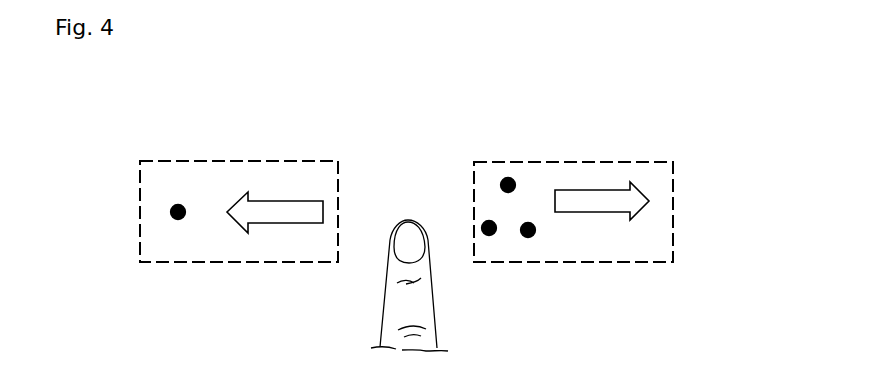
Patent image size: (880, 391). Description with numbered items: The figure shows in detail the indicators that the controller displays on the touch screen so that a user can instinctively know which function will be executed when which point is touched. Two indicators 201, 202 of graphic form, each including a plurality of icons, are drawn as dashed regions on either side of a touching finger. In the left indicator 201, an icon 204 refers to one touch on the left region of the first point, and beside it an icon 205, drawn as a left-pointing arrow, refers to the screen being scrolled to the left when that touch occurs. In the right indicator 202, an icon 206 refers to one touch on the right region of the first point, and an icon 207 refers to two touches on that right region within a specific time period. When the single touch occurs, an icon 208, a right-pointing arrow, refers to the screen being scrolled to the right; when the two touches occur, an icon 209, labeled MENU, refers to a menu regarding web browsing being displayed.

The indicator 201 is at (238, 161).
The indicator 202 is at (673, 215).
The icon 204 is at (171, 212).
The icon 205 is at (285, 223).
The icon 206 is at (509, 177).
The icon 207 is at (509, 233).
The icon 208 is at (600, 190).
The icon 209 is at (618, 250).